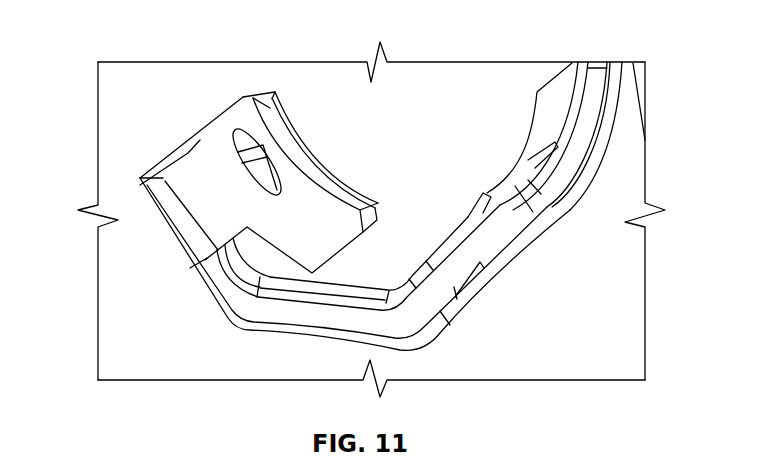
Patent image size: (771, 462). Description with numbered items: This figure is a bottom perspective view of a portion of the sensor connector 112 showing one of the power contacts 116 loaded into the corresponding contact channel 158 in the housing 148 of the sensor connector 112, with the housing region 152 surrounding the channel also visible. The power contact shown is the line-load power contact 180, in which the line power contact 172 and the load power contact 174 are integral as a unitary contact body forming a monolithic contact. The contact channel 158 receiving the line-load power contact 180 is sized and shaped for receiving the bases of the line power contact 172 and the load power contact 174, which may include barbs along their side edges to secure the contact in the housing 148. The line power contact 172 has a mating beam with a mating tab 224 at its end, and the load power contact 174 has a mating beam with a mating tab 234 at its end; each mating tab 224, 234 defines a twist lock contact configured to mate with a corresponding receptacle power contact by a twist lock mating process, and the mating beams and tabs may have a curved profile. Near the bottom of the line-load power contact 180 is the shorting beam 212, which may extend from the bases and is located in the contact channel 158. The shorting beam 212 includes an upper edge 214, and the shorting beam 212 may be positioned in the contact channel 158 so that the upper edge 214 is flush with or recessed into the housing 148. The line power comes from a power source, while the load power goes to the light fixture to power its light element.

The sensor connector 112 is at (356, 44).
The power contacts 116 is at (601, 166).
The housing 148 is at (625, 295).
The panel surface 152 is at (547, 337).
The contact channel 158 is at (310, 330).
The line power contact 172 is at (293, 125).
The load power contact 174 is at (597, 112).
The line-load power contact 180 is at (490, 160).
The shorting beam 212 is at (370, 320).
The upper edge 214 is at (270, 315).
The mating tab 224 is at (300, 235).
The mating tab 234 is at (558, 98).